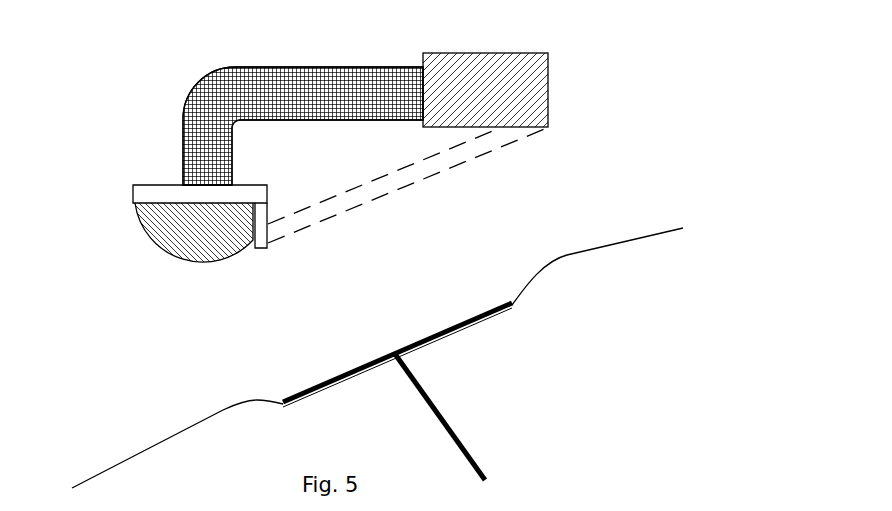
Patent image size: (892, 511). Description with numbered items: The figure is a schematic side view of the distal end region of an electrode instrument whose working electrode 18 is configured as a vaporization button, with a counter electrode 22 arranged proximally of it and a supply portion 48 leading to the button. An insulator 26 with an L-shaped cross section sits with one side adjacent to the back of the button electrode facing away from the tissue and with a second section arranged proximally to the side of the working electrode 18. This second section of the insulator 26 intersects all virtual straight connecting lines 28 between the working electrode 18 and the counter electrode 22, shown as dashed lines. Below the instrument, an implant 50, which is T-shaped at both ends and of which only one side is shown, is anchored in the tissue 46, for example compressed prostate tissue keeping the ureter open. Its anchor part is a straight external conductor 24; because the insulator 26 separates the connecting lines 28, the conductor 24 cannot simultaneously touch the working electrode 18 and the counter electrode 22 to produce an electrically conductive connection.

The working electrode 18 is at (143, 232).
The counter electrode 22 is at (548, 75).
The conductor 24 is at (470, 328).
The insulator 26 is at (267, 210).
The virtual straight connecting lines 28 is at (478, 147).
The tissue 46 is at (160, 416).
The fluid conduit 48 is at (182, 142).
The implant 50 is at (480, 414).